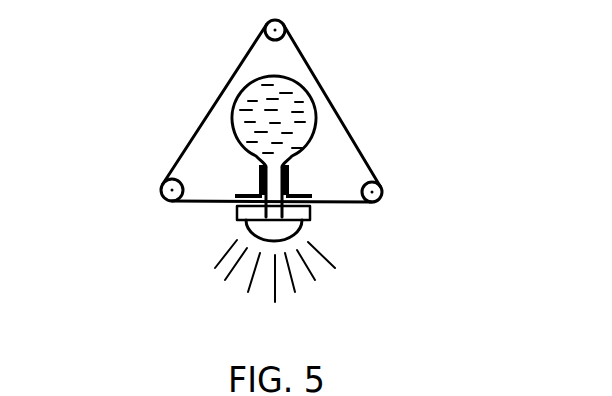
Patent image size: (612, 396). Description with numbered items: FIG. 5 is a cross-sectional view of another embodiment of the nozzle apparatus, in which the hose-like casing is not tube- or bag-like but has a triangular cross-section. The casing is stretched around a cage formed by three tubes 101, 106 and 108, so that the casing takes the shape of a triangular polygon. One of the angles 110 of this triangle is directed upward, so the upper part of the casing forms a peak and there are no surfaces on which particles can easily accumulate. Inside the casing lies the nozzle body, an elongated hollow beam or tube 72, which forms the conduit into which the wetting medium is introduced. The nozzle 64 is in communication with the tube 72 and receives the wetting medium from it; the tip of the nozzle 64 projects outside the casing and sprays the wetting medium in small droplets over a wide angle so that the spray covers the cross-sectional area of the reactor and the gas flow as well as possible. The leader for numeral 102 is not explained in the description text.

The angle 110 is at (215, 53).
The tube 101 is at (284, 28).
The belt 102 is at (348, 121).
The elongated hollow beam or tube 72 is at (318, 134).
The tube 106 is at (380, 202).
The tube 108 is at (163, 200).
The nozzle 64 is at (222, 270).